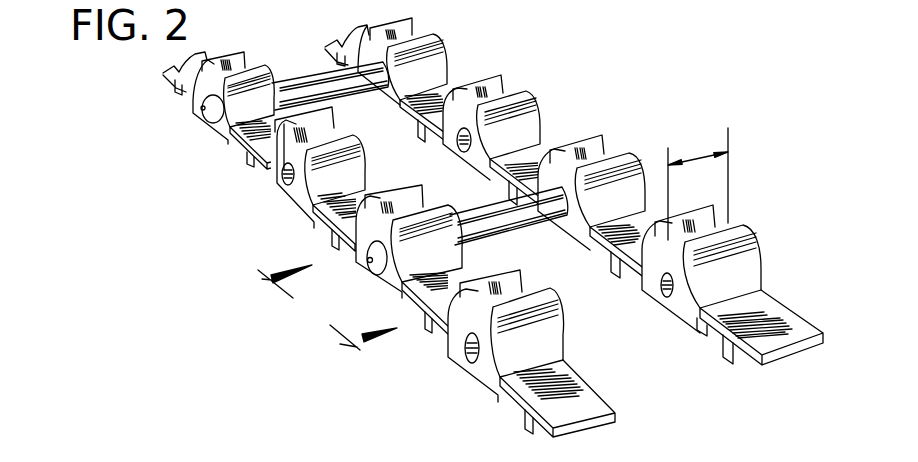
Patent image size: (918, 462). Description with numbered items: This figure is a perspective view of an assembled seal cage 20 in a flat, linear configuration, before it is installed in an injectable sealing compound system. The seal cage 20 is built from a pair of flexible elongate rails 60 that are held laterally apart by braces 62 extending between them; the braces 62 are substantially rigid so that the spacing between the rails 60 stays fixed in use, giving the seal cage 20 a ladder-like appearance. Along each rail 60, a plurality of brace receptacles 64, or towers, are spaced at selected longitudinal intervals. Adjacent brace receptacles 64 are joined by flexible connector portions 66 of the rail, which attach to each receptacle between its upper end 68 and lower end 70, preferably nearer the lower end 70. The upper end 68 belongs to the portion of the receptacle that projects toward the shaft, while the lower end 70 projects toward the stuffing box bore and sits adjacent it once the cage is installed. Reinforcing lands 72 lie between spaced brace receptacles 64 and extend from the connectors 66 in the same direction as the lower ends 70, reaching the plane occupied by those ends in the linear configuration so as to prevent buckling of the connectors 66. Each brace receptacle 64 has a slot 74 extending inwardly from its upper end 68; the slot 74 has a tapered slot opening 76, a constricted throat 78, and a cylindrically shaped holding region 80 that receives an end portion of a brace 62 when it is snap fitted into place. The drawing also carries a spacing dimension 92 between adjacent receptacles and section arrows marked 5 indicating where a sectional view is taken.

The seal cage 20 is at (160, 119).
The flexible elongate rails 60 is at (463, 127).
The braces 62 is at (313, 83).
The brace receptacles 64 is at (457, 305).
The connector portions 66 is at (522, 160).
The upper end 68 is at (733, 223).
The lower end 70 is at (213, 135).
The reinforcing lands 72 is at (353, 248).
The slot 74 is at (562, 175).
The tapered slot opening 76 is at (483, 283).
The constricted throat 78 is at (473, 340).
The holding region 80 is at (663, 296).
The module spacing 92 is at (701, 150).
The section line 5- 5 is at (320, 319).